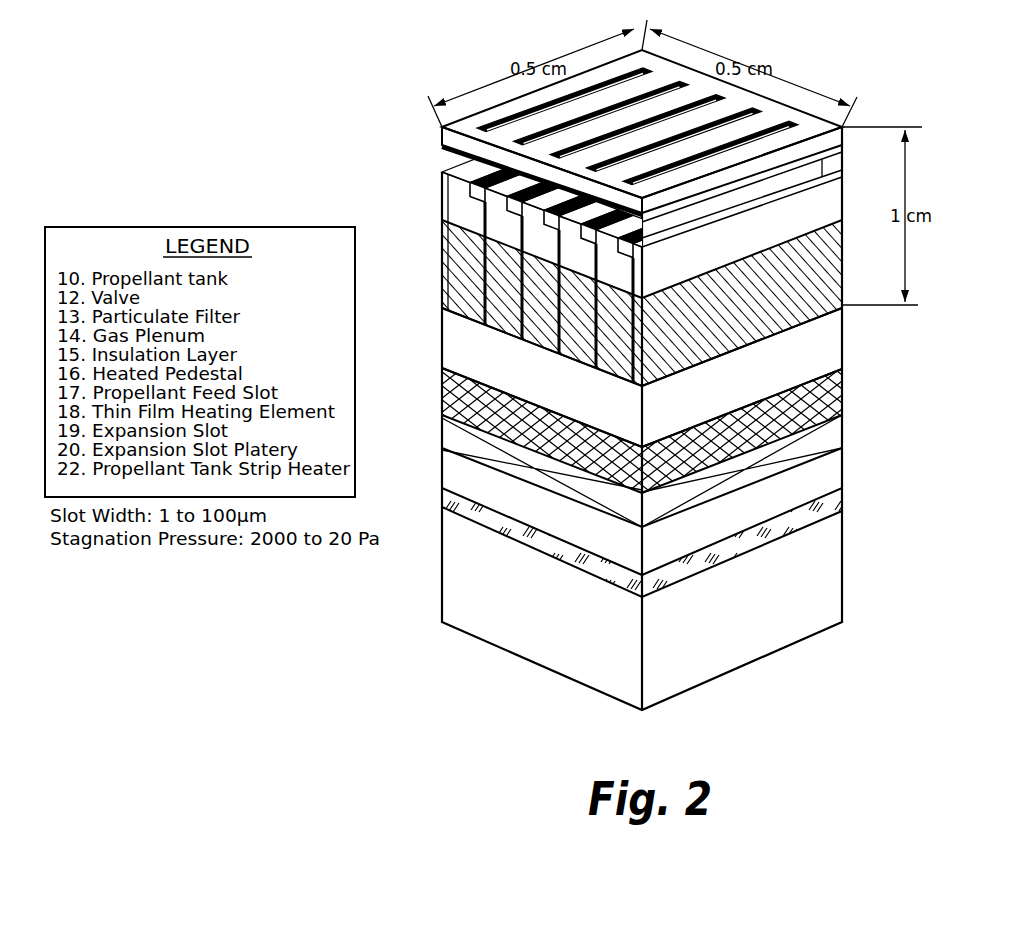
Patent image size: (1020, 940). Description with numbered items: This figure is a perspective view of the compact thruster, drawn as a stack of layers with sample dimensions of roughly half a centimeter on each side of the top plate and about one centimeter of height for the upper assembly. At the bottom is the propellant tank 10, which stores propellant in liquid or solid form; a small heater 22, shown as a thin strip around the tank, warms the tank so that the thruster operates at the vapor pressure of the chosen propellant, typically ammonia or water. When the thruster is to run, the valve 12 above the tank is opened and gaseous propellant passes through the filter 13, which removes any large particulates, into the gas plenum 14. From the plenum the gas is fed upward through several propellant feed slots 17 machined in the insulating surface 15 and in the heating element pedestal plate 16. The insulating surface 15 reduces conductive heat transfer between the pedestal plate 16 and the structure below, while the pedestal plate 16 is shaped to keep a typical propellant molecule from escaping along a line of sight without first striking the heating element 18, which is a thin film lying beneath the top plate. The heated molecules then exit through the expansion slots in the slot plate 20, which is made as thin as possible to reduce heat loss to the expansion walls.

The propellant tank 10 is at (423, 562).
The valve 12 is at (448, 439).
The filter 13 is at (458, 406).
The gas plenum 14 is at (458, 350).
The insulating surface 15 is at (458, 288).
The heating element pedestal plate 16 is at (466, 201).
The propellant feed slot 17 is at (717, 218).
The heating element 18 is at (455, 156).
The slot plate 20 is at (440, 126).
The heater 22 is at (808, 522).